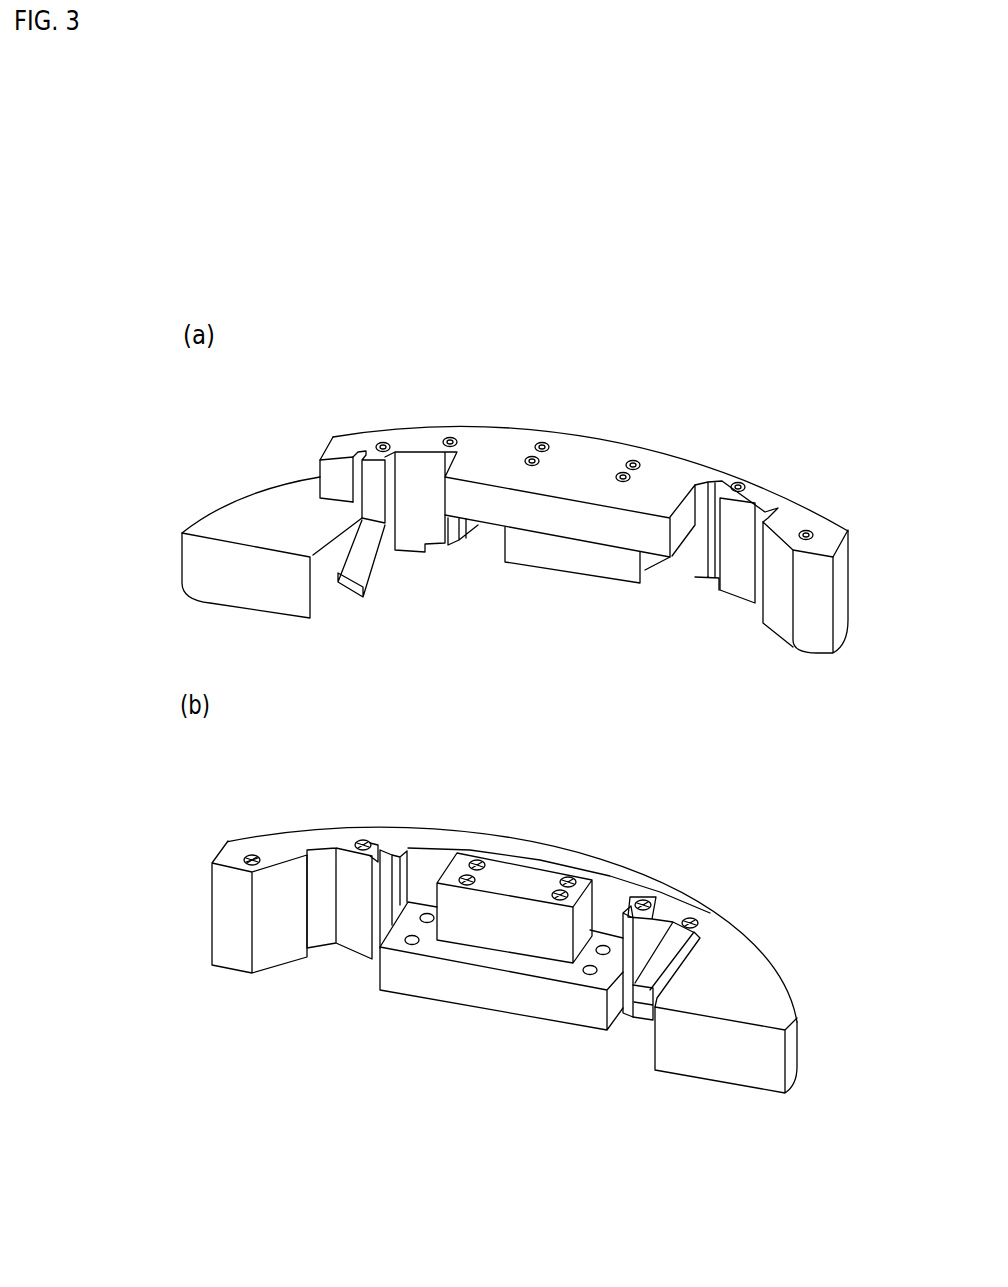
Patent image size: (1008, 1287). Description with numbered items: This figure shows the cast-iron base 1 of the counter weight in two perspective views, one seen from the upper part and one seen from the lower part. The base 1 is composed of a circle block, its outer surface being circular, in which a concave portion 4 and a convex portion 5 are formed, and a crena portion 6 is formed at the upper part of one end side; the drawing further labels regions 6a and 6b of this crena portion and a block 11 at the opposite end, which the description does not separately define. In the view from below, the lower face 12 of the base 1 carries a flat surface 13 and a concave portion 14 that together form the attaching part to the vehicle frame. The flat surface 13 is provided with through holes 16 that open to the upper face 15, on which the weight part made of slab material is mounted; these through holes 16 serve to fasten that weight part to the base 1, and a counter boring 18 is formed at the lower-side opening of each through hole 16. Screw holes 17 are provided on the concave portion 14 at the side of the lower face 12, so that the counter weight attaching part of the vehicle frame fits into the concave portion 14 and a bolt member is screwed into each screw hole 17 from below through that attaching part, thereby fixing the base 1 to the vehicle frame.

The base made of cast iron 1 is at (690, 440).
The concave portion 4 is at (470, 530).
The convex portion 5 is at (373, 572).
The crena portion 6 is at (217, 517).
The top surface of end block 6a is at (250, 507).
The step portion of end block 6b is at (330, 475).
The end block 11 is at (823, 618).
The lower face 12 is at (753, 990).
The flat surface 13 is at (302, 838).
The concave portion 14 is at (427, 875).
The upper face 15 is at (492, 435).
The through holes 16 is at (382, 442).
The screw holes 17 is at (437, 918).
The counter boring 18 is at (257, 857).